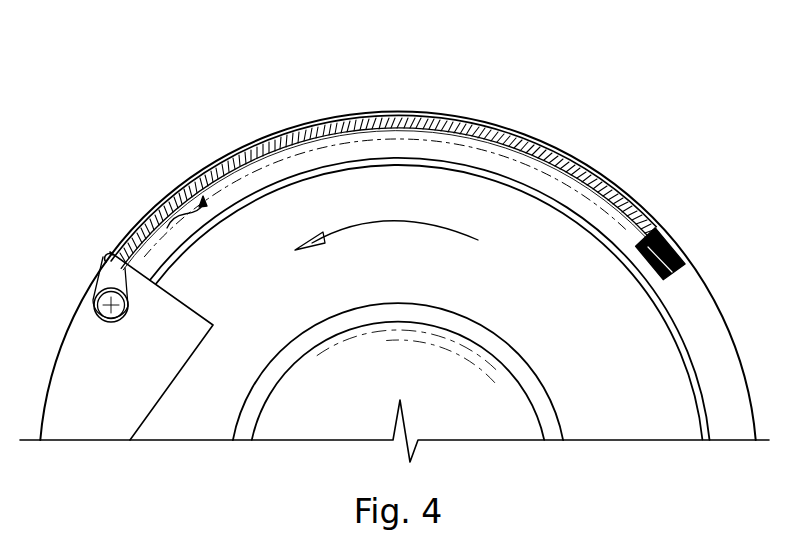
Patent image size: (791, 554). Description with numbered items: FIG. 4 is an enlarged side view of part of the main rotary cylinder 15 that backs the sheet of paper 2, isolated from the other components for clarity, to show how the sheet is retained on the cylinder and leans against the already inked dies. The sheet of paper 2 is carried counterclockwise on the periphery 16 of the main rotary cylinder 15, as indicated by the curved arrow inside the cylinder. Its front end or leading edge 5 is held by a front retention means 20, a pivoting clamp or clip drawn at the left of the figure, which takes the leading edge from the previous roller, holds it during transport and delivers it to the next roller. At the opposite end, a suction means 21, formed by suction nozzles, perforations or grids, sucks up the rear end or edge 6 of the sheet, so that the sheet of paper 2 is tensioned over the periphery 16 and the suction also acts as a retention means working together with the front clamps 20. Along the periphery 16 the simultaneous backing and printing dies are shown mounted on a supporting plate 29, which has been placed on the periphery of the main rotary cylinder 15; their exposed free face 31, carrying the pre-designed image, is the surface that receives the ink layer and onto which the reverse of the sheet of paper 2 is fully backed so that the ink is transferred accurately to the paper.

The sheet of paper 2 is at (238, 148).
The free face 31 is at (374, 112).
The supporting plate 29 is at (155, 197).
The rear end or edge 6 is at (679, 243).
The suction means 21 is at (672, 279).
The front retention means 20 is at (97, 292).
The front end or leading edge 5 is at (102, 252).
The main rotary cylinder 15 is at (252, 294).
The periphery 16 is at (725, 322).